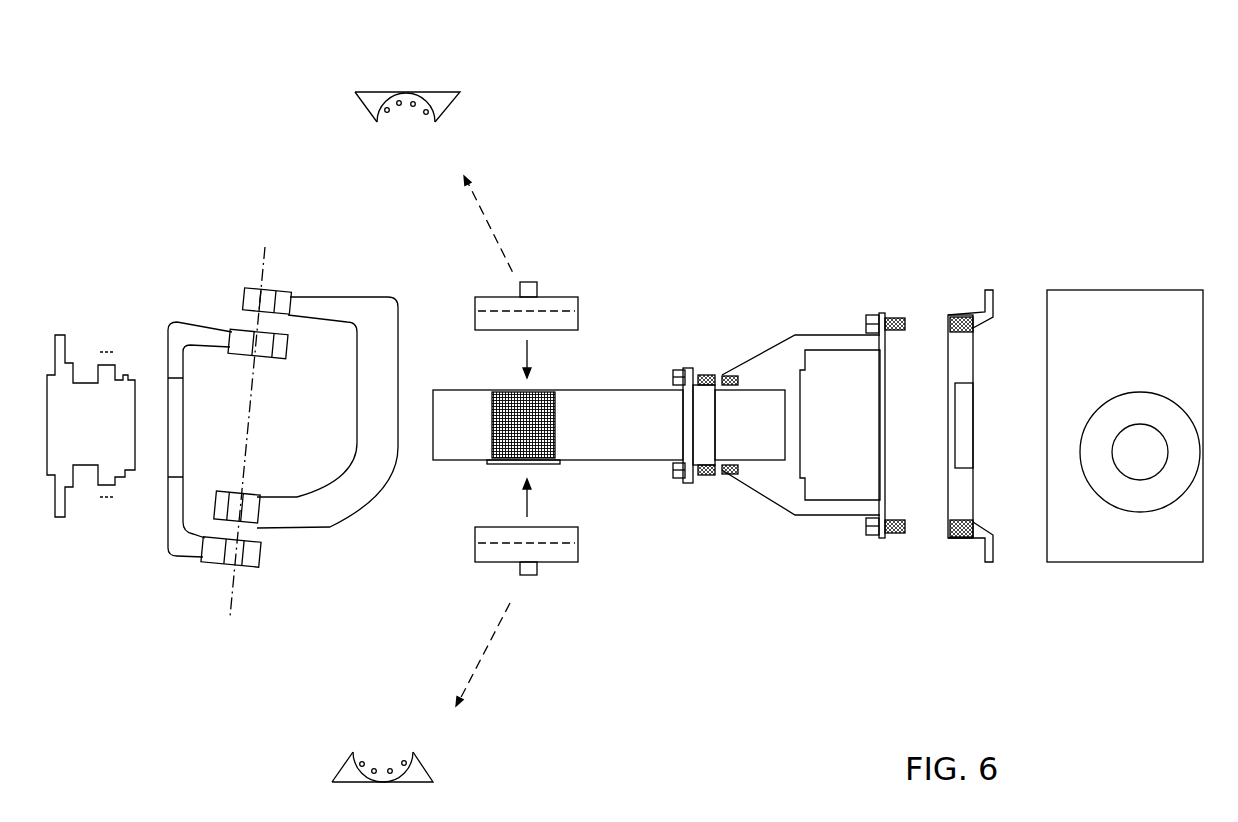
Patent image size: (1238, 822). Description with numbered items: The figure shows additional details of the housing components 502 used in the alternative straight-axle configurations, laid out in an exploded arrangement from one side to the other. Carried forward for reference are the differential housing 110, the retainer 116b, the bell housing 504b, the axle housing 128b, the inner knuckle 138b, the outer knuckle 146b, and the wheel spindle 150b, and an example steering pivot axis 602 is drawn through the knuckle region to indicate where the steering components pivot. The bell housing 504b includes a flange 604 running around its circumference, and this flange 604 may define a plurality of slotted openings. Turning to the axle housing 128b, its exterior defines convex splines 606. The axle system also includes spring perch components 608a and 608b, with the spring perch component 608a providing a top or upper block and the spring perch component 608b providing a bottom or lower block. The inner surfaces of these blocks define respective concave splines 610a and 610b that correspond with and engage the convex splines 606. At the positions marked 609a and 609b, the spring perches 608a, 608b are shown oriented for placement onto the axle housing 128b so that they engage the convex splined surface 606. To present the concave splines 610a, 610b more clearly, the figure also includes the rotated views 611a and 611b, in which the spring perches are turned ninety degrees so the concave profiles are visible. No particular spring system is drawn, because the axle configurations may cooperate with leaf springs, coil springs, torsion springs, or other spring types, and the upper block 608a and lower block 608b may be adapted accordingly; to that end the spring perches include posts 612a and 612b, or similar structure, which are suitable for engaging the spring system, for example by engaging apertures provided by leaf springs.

The differential housing 110 is at (1130, 303).
The retainer 116b is at (963, 312).
The axle housing 128b is at (598, 460).
The inner knuckle 138b is at (325, 507).
The outer knuckle 146b is at (180, 543).
The wheel spindle 150b is at (80, 402).
The housing components 502 is at (747, 180).
The bell housing 504b is at (772, 495).
The steering pivot axis 602 is at (262, 283).
The flange 604 is at (880, 313).
The convex splines 606 is at (512, 465).
The spring perch component 608a is at (460, 92).
The spring perch component 608b is at (433, 795).
The spring perch orientation view 609a is at (622, 262).
The spring perch orientation view 609b is at (563, 603).
The concave splines 610a is at (407, 123).
The concave splines 610b is at (377, 750).
The rotated view 611a is at (391, 87).
The rotated view 611b is at (322, 753).
The post 612a is at (537, 282).
The post 612b is at (525, 577).